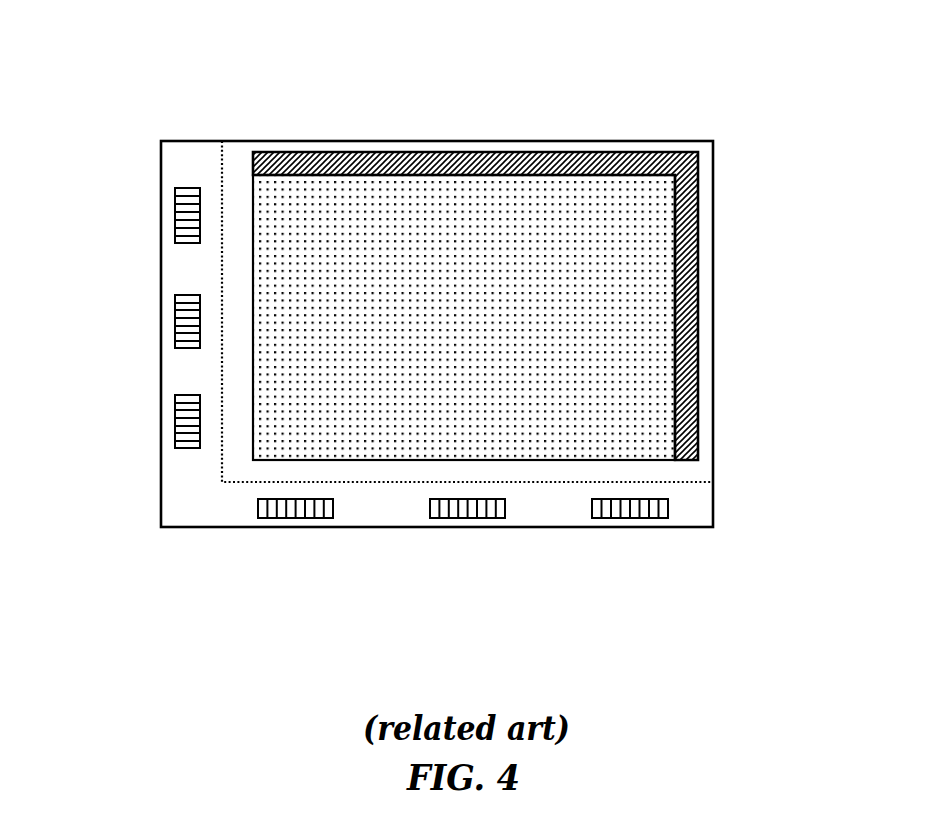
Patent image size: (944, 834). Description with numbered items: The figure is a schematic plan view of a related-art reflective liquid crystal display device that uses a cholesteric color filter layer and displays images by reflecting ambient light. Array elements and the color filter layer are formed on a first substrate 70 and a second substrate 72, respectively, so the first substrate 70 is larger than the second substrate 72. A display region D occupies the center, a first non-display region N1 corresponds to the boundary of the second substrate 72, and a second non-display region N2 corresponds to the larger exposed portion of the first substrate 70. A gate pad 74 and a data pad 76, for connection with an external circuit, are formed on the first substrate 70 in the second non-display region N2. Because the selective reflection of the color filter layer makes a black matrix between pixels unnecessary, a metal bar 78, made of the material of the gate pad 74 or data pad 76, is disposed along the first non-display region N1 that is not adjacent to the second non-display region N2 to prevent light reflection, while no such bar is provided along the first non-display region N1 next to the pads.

The first substrate 70 is at (713, 508).
The second substrate 72 is at (713, 362).
The gate pad 74 is at (192, 210).
The data pad 76 is at (297, 510).
The metal bar 78 is at (588, 156).
The display region D is at (413, 193).
The first non-display region N1 is at (490, 146).
The second non-display region N2 is at (202, 162).